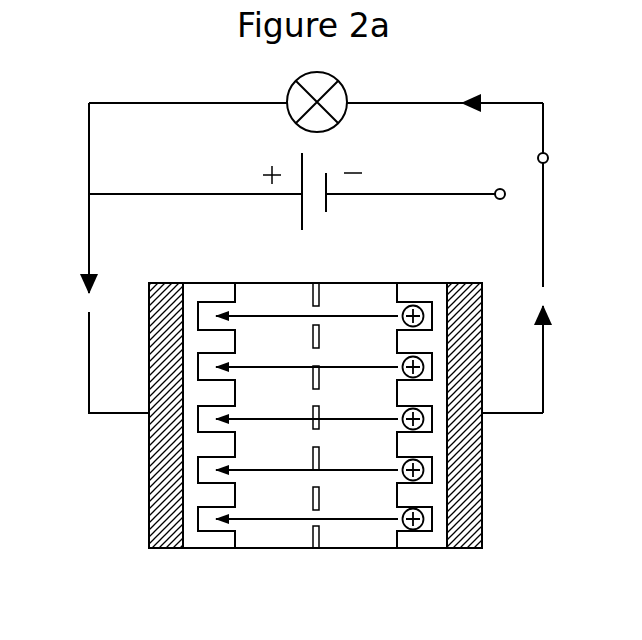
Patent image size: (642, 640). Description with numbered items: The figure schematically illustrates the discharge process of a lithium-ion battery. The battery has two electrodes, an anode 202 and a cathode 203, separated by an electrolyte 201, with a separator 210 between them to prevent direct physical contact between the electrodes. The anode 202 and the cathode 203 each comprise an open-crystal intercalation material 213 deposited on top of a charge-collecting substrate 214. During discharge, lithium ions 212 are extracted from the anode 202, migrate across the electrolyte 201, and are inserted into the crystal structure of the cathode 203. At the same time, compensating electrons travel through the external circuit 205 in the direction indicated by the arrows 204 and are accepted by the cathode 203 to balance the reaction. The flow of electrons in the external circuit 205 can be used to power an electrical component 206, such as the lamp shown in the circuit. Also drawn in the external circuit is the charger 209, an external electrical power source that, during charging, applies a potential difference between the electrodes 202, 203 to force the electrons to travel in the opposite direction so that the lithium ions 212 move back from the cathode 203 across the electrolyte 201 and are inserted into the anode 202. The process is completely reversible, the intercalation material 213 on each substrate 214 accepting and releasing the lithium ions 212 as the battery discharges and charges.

The electrolyte 201 is at (272, 530).
The anode 202 is at (502, 561).
The cathode 203 is at (126, 568).
The arrows 204 is at (457, 95).
The external circuit 205 is at (146, 102).
The electrical component 206 is at (298, 100).
The charger 209 is at (349, 211).
The separator 210 is at (317, 542).
The lithium ions 212 is at (412, 528).
The open-crystal intercalation material 213 is at (197, 443).
The charge-collecting substrate 214 is at (153, 498).